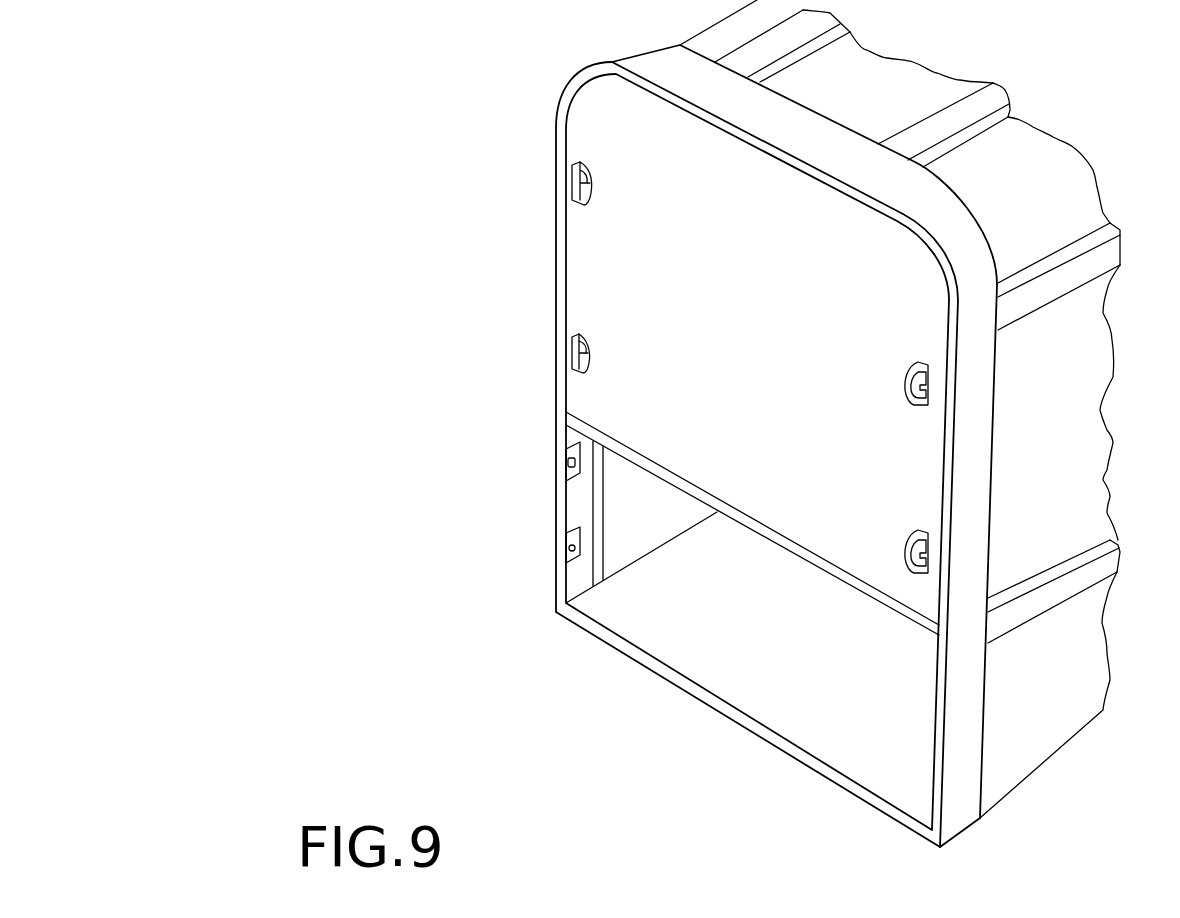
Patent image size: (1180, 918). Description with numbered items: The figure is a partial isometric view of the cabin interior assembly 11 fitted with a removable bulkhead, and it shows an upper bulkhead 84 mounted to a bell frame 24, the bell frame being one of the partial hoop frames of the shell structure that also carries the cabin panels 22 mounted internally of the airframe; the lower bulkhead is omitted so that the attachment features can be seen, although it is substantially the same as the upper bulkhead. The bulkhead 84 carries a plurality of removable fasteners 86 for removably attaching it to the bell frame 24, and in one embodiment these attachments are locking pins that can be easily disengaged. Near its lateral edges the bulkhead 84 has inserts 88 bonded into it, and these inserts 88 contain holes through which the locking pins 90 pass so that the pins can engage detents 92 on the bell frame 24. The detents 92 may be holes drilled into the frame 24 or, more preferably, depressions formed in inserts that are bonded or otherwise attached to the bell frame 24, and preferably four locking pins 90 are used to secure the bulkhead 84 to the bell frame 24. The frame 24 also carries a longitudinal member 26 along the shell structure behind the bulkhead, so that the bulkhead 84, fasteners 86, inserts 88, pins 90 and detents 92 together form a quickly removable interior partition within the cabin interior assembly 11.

The opening 11 is at (787, 695).
The panel 22 is at (1062, 433).
The bell frame 24 is at (975, 367).
The rail 26 is at (1047, 595).
The upper bulkhead 84 is at (620, 247).
The removable fastener 86 is at (530, 185).
The insert 88 is at (623, 356).
The locking pin 90 is at (584, 343).
The detent 92 is at (572, 548).